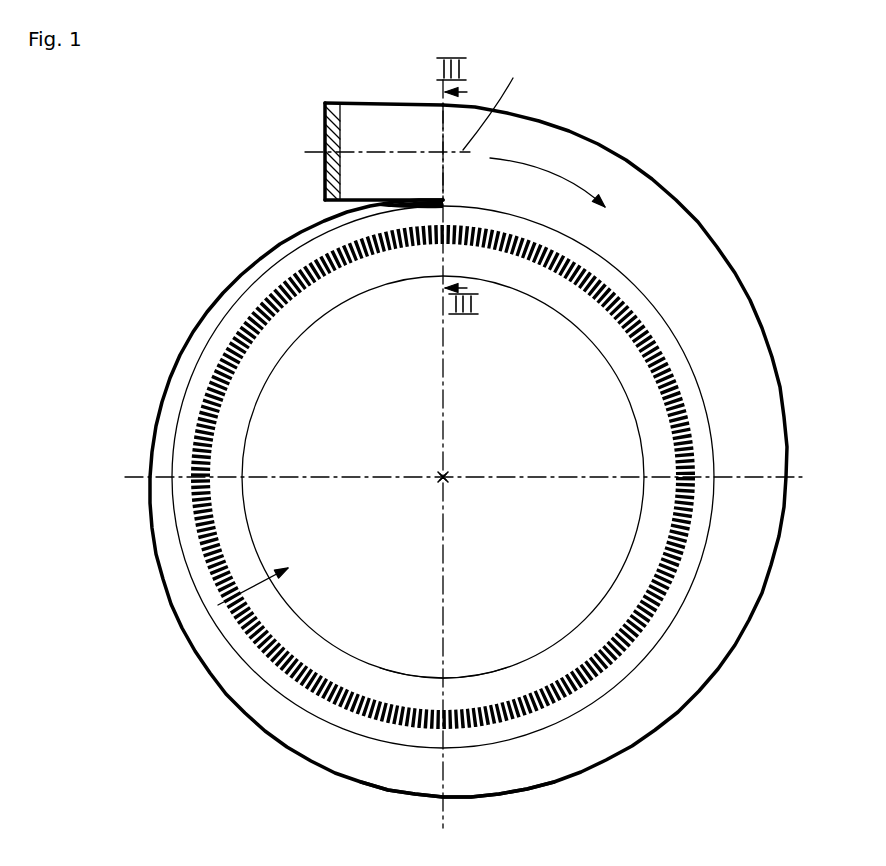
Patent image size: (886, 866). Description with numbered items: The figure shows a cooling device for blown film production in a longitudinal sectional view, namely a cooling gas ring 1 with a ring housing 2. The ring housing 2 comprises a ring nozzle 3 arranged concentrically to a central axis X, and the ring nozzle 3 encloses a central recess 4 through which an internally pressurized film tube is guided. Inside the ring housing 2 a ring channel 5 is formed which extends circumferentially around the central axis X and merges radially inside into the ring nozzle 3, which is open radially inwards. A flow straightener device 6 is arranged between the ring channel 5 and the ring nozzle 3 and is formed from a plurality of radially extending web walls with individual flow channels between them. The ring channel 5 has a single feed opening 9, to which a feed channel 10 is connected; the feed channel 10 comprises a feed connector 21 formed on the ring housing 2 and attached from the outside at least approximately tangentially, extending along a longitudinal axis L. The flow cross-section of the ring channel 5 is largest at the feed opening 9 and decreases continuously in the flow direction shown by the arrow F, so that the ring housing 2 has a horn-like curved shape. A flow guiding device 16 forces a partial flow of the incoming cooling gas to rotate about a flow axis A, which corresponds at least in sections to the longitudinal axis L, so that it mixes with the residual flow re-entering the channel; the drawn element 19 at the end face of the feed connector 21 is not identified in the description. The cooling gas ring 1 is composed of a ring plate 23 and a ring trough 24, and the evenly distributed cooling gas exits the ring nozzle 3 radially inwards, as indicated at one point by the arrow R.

The cooling gas ring 1 is at (491, 416).
The ring housing 2 is at (683, 203).
The ring nozzle 3 is at (620, 357).
The central recess 4 is at (514, 562).
The ring channel 5 is at (738, 583).
The flow straightener device 6 is at (692, 410).
The feed opening 9 is at (435, 130).
The feed channel 10 is at (332, 123).
The flow guiding device 16 is at (323, 123).
The flange plate 19 is at (325, 185).
The feed connector 21 is at (360, 102).
The ring plate 23 is at (520, 682).
The ring trough 24 is at (583, 777).
The central axis X is at (447, 472).
The longitudinal axis L is at (340, 157).
The radial flow arrow R is at (258, 583).
The flow direction arrow F is at (555, 141).
The flow axis A is at (496, 99).